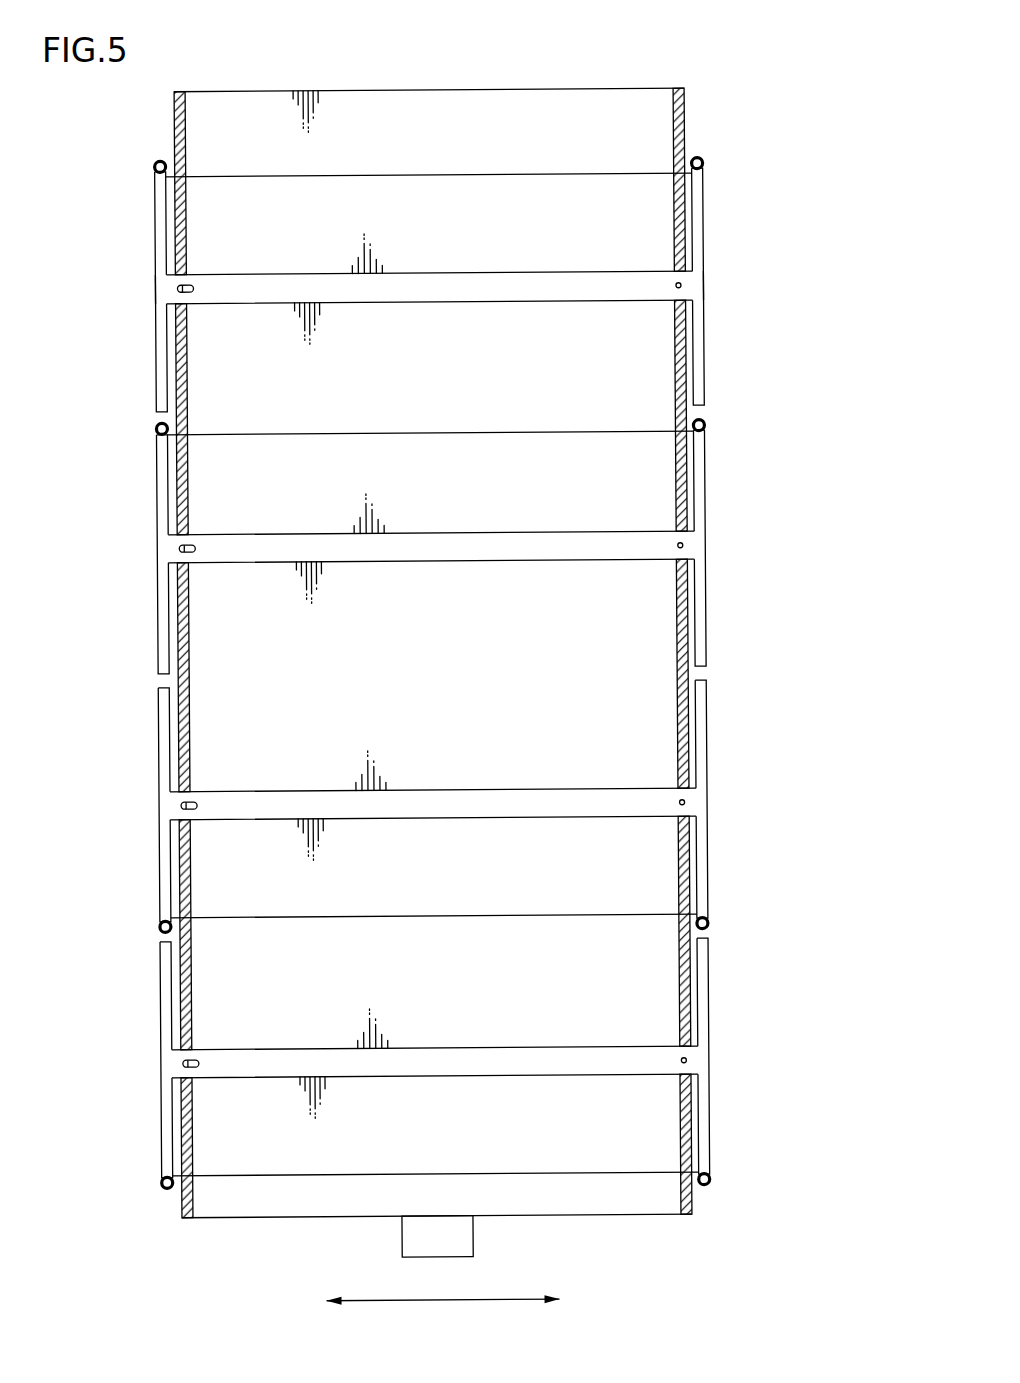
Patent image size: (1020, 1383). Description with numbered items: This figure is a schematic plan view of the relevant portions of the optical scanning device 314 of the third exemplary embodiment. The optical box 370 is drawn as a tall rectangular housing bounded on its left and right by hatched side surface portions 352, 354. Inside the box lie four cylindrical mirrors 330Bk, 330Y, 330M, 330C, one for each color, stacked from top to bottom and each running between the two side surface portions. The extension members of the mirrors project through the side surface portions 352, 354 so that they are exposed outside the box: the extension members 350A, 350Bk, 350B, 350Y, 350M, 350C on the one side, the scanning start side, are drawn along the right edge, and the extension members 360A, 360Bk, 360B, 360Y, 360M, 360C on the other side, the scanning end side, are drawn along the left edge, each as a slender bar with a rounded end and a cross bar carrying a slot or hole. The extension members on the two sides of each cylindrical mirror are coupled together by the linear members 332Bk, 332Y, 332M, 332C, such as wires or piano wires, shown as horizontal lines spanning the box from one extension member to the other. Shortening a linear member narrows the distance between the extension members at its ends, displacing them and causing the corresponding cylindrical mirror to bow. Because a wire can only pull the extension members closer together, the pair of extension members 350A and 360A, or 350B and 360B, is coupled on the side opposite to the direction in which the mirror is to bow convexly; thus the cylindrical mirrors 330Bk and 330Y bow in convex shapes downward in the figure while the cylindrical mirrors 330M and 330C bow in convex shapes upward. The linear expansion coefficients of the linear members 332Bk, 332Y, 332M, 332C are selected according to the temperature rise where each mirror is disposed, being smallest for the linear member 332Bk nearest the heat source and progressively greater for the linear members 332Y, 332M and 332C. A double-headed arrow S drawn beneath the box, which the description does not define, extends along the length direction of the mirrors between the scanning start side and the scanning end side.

The optical scanning device 314 is at (565, 75).
The optical box 370 is at (437, 89).
The side surface portion 352 is at (177, 118).
The side surface portion 354 is at (689, 114).
The linear member 332Bk is at (434, 174).
The linear member 332Y is at (437, 432).
The linear member 332M is at (437, 915).
The linear member 332C is at (437, 1173).
The cylindrical mirror 330Bk is at (465, 270).
The cylindrical mirror 330Y is at (465, 530).
The cylindrical mirror 330M is at (465, 787).
The cylindrical mirror 330C is at (465, 1045).
The extension member 360A is at (157, 178).
The extension member 360Bk is at (157, 285).
The extension member 360B is at (157, 388).
The extension member 360Y is at (157, 604).
The extension member 360M is at (158, 866).
The extension member 360C is at (160, 1124).
The extension member 350A is at (707, 176).
The extension member 350Bk is at (707, 286).
The extension member 350B is at (707, 388).
The extension member 350Y is at (707, 482).
The extension member 350M is at (707, 738).
The extension member 350C is at (708, 993).
The main scanning direction S is at (433, 1304).